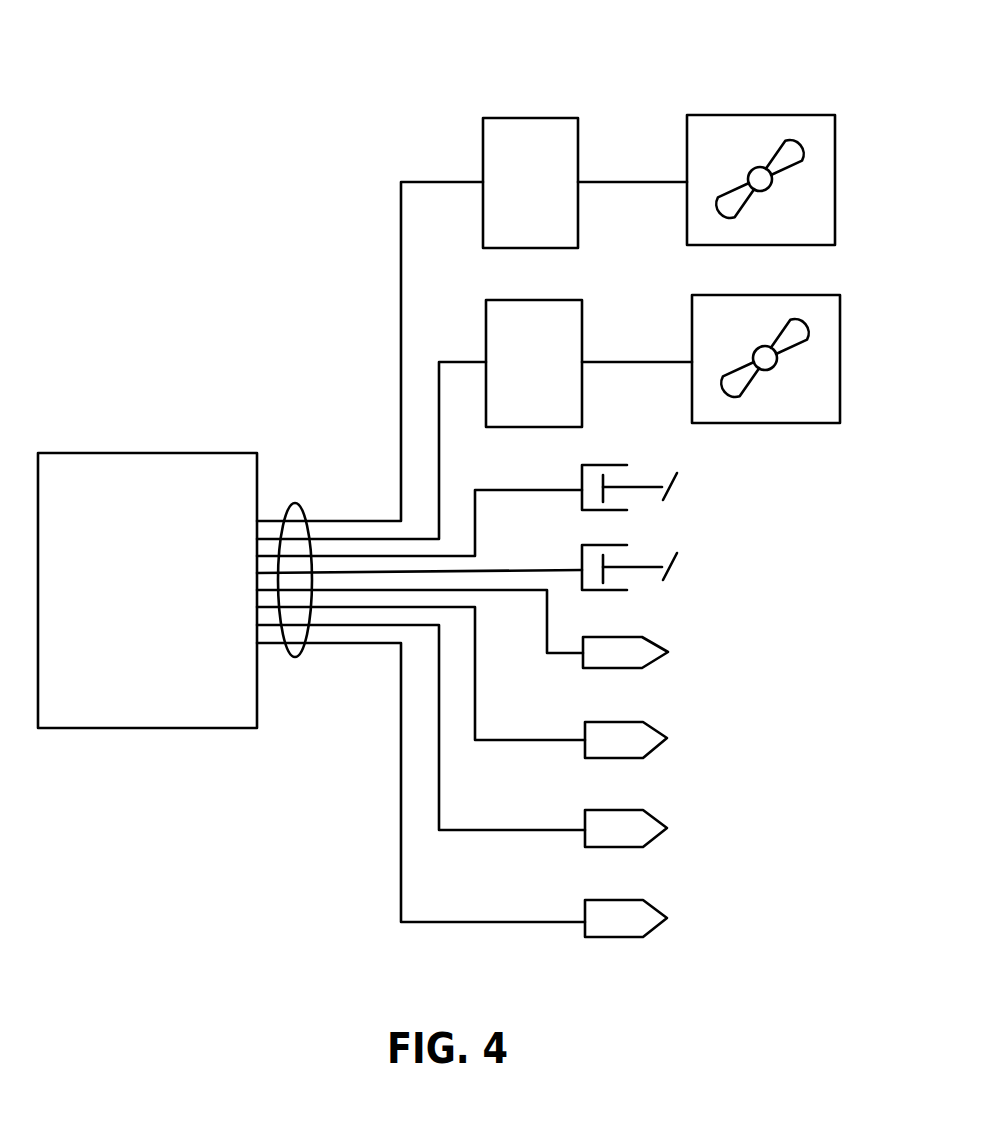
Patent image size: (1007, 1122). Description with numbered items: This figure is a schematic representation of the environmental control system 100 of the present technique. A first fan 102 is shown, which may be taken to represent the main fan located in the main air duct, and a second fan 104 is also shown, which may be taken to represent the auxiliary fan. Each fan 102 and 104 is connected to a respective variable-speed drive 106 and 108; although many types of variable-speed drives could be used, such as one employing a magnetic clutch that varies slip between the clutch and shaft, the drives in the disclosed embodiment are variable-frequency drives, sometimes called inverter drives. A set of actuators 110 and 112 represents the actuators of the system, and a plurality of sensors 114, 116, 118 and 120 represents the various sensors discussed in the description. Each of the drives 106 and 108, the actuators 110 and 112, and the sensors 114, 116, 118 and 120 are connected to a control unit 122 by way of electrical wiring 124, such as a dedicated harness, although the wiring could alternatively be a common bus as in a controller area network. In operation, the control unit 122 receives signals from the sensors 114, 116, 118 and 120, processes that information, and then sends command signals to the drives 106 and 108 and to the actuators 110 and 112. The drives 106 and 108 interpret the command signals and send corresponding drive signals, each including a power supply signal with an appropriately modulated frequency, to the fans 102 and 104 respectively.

The environmental control system 100 is at (124, 333).
The first fan 102 is at (794, 115).
The second fan 104 is at (823, 295).
The variable-speed drive 106 is at (548, 118).
The variable-speed drive 108 is at (567, 300).
The actuator 110 is at (605, 465).
The actuator 112 is at (625, 546).
The sensor 114 is at (648, 638).
The sensor 116 is at (657, 723).
The sensor 118 is at (657, 810).
The sensor 120 is at (657, 900).
The control unit 122 is at (98, 728).
The electrical wiring 124 is at (302, 654).